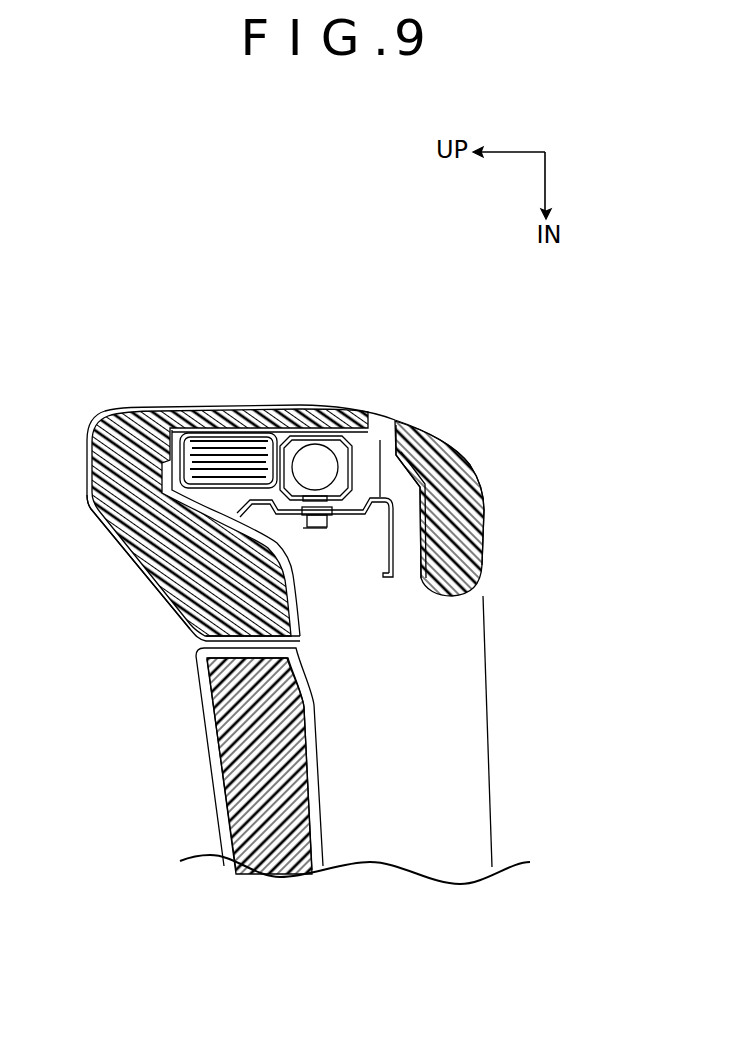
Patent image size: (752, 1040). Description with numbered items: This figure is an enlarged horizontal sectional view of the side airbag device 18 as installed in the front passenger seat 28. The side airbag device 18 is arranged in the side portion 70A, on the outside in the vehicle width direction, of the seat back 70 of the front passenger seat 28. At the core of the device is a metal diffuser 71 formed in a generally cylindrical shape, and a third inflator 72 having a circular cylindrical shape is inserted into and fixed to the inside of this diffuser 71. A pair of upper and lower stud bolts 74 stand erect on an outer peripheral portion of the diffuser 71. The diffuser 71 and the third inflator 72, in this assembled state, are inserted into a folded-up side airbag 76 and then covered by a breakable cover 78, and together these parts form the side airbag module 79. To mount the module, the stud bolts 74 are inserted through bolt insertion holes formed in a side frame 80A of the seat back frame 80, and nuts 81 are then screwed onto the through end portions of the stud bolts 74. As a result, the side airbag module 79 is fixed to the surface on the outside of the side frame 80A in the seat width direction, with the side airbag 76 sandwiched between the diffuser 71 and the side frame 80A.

The side airbag device 18 is at (277, 405).
The front passenger seat 28 is at (169, 786).
The seat back 70 is at (148, 605).
The side portion 70A is at (122, 557).
The diffuser 71 is at (347, 500).
The third inflator 72 is at (326, 437).
The stud bolts 74 is at (313, 529).
The side airbag 76 is at (219, 450).
The breakable cover 78 is at (247, 432).
The side airbag module 79 is at (367, 453).
The seat back frame 80 is at (436, 477).
The side frame 80A is at (393, 425).
The nuts 81 is at (327, 533).